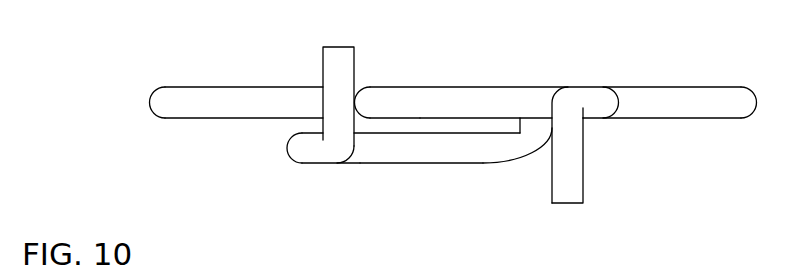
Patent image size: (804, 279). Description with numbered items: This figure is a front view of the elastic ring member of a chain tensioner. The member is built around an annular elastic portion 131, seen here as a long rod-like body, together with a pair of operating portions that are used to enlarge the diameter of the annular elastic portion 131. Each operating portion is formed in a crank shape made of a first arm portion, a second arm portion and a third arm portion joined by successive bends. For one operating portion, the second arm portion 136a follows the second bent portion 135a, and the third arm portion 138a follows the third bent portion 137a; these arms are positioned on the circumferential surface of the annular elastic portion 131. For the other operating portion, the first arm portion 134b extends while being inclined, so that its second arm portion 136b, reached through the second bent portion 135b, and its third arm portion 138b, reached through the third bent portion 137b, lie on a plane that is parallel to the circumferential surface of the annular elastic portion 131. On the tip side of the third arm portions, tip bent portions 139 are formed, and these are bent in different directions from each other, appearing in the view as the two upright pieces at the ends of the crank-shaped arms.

The annular elastic portion 131 is at (235, 102).
The tip bent portion 139 is at (337, 70).
The second bent portion 135a is at (362, 100).
The second arm portion 136a is at (460, 102).
The first arm portion 134b is at (535, 122).
The third bent portion 137a is at (620, 103).
The third arm portion 138a is at (595, 105).
The third bent portion 137b is at (287, 151).
The third arm portion 138b is at (308, 152).
The second arm portion 136b is at (423, 150).
The second bent portion 135b is at (532, 142).